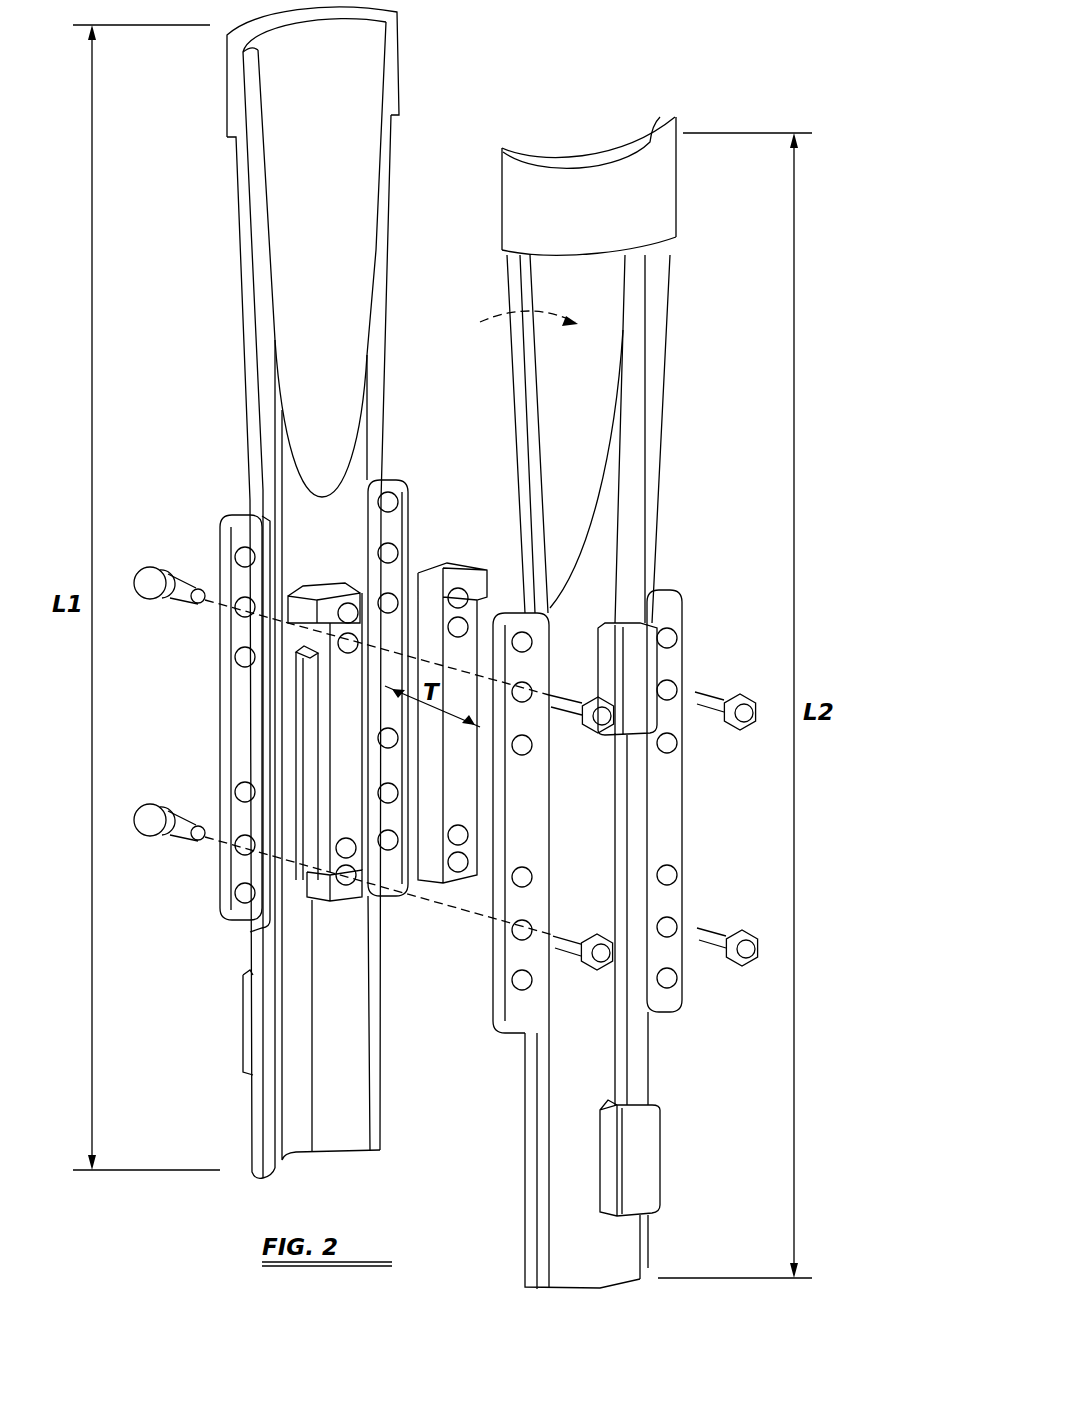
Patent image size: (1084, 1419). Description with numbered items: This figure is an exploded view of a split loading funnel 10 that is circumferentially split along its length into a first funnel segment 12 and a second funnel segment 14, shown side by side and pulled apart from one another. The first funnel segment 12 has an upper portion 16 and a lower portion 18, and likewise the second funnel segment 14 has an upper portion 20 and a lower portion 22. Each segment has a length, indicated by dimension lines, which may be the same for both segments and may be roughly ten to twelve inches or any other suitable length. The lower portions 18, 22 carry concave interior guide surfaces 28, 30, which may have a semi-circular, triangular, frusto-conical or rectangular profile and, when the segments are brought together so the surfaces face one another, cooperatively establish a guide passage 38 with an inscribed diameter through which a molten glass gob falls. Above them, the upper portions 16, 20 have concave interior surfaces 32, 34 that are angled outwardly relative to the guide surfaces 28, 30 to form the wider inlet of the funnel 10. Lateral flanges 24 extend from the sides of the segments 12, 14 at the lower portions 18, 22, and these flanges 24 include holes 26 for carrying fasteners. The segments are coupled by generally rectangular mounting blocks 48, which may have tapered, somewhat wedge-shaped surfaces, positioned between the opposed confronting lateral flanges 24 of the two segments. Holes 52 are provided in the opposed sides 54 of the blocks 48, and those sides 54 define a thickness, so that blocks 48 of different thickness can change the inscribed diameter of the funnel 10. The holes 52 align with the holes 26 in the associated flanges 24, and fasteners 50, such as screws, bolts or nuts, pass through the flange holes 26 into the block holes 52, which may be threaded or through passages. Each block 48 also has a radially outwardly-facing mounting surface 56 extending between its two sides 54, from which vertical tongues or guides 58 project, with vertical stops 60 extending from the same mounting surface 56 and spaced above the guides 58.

The split loading funnel 10 is at (508, 92).
The first funnel segment 12 is at (227, 88).
The second funnel segment 14 is at (677, 186).
The upper portion 16 is at (275, 592).
The lower portion 18 is at (270, 517).
The upper portion 20 is at (592, 703).
The lower portion 22 is at (598, 592).
The lateral flanges 24 is at (455, 883).
The holes 26 is at (245, 660).
The concave interior guide surface 28 is at (300, 1005).
The concave interior guide surface 30 is at (560, 1093).
The concave interior surface 32 is at (303, 275).
The concave interior surface 34 is at (480, 322).
The guide passage 38 is at (448, 1148).
The mounting blocks 48 is at (438, 815).
The fasteners 50 is at (150, 568).
The holes 52 is at (468, 590).
The opposed sides 54 is at (425, 570).
The mounting surfaces 56 is at (318, 635).
The vertical tongues or guides 58 is at (305, 778).
The vertical stops 60 is at (300, 598).